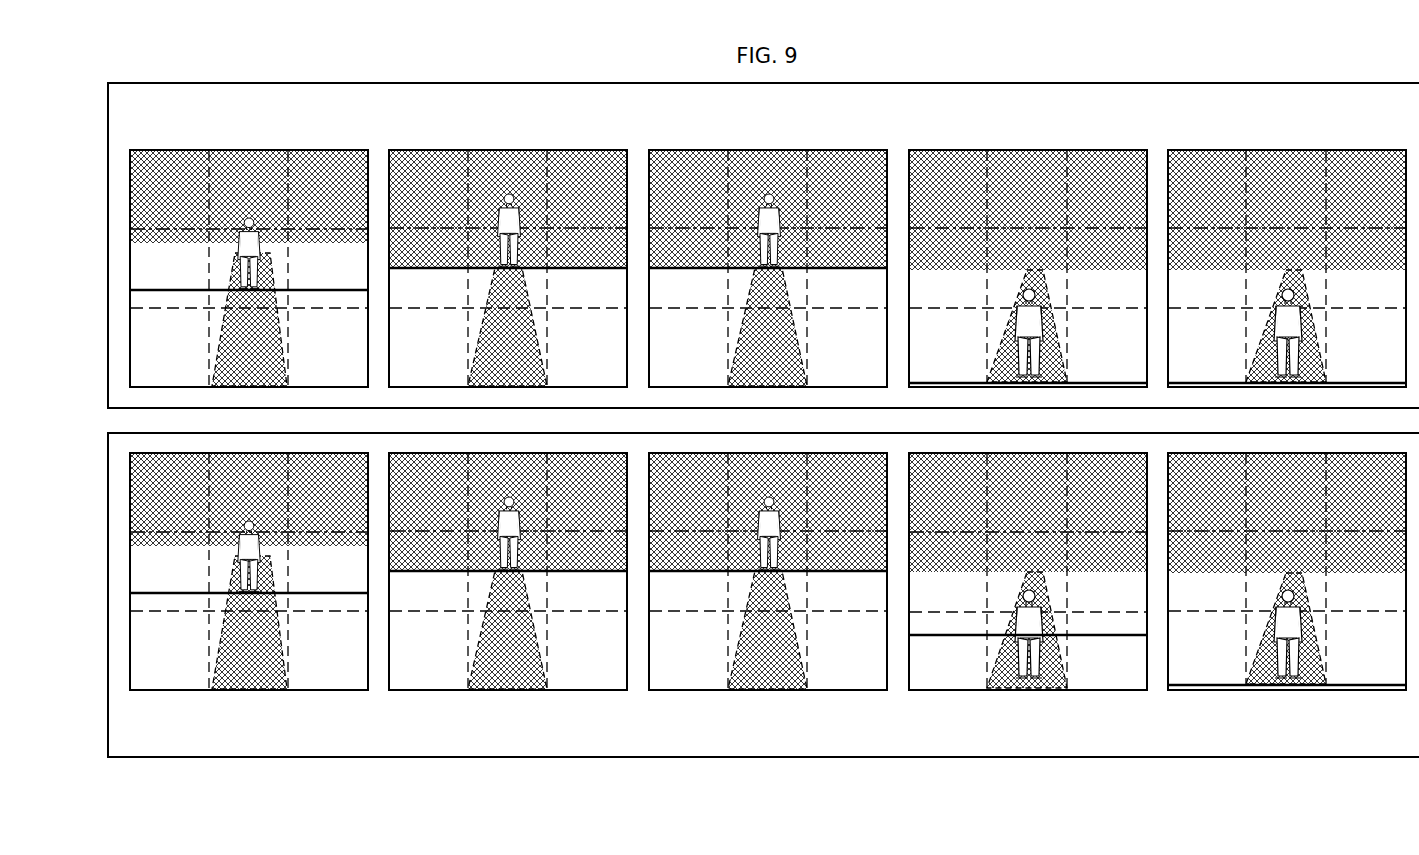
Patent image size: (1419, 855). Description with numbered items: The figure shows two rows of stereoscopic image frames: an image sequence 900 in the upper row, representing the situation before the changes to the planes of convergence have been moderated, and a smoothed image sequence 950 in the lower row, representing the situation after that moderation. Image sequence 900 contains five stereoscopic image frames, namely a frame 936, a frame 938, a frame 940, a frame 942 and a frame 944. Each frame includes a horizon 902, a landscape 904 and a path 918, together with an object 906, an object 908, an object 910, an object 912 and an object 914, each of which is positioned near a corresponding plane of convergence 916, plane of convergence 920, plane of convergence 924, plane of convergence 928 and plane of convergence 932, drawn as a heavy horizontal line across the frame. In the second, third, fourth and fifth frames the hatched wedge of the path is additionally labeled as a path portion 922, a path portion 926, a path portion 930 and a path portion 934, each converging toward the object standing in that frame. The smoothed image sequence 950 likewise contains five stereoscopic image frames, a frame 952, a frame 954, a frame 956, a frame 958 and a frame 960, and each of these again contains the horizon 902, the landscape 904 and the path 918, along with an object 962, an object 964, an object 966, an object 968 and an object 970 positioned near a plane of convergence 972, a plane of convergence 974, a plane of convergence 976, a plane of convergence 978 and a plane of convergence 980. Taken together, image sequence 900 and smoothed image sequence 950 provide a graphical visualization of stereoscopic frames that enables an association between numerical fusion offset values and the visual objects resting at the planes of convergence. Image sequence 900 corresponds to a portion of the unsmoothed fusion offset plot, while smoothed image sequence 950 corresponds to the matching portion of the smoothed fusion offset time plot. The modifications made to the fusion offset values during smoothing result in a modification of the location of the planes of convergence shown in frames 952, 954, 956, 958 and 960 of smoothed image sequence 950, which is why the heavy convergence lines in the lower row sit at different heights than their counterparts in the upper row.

The image sequence 900 is at (500, 82).
The smoothed image sequence 950 is at (502, 759).
The horizon 902 is at (795, 195).
The landscape 904 is at (573, 361).
The object 906 is at (263, 245).
The object 908 is at (525, 222).
The object 910 is at (785, 222).
The object 912 is at (1023, 292).
The object 914 is at (1283, 292).
The plane of convergence 916 is at (178, 292).
The path 918 is at (282, 346).
The plane of convergence 920 is at (450, 272).
The field of view cone in second frame 922 is at (527, 296).
The plane of convergence 924 is at (710, 272).
The field of view cone in third frame 926 is at (787, 314).
The plane of convergence 928 is at (950, 382).
The field of view cone in fourth frame 930 is at (1050, 335).
The plane of convergence 932 is at (1209, 382).
The field of view cone in fifth frame 934 is at (1309, 335).
The frame 936 is at (249, 241).
The frame 938 is at (508, 241).
The frame 940 is at (768, 241).
The frame 942 is at (1028, 242).
The frame 944 is at (1287, 242).
The frame 952 is at (249, 599).
The frame 954 is at (508, 599).
The frame 956 is at (768, 599).
The frame 958 is at (1028, 599).
The frame 960 is at (1287, 599).
The object 962 is at (263, 548).
The object 964 is at (525, 525).
The object 966 is at (785, 525).
The object 968 is at (1040, 593).
The object 970 is at (1300, 593).
The plane of convergence 972 is at (178, 596).
The plane of convergence 974 is at (450, 575).
The plane of convergence 976 is at (710, 575).
The plane of convergence 978 is at (970, 634).
The plane of convergence 980 is at (1365, 684).